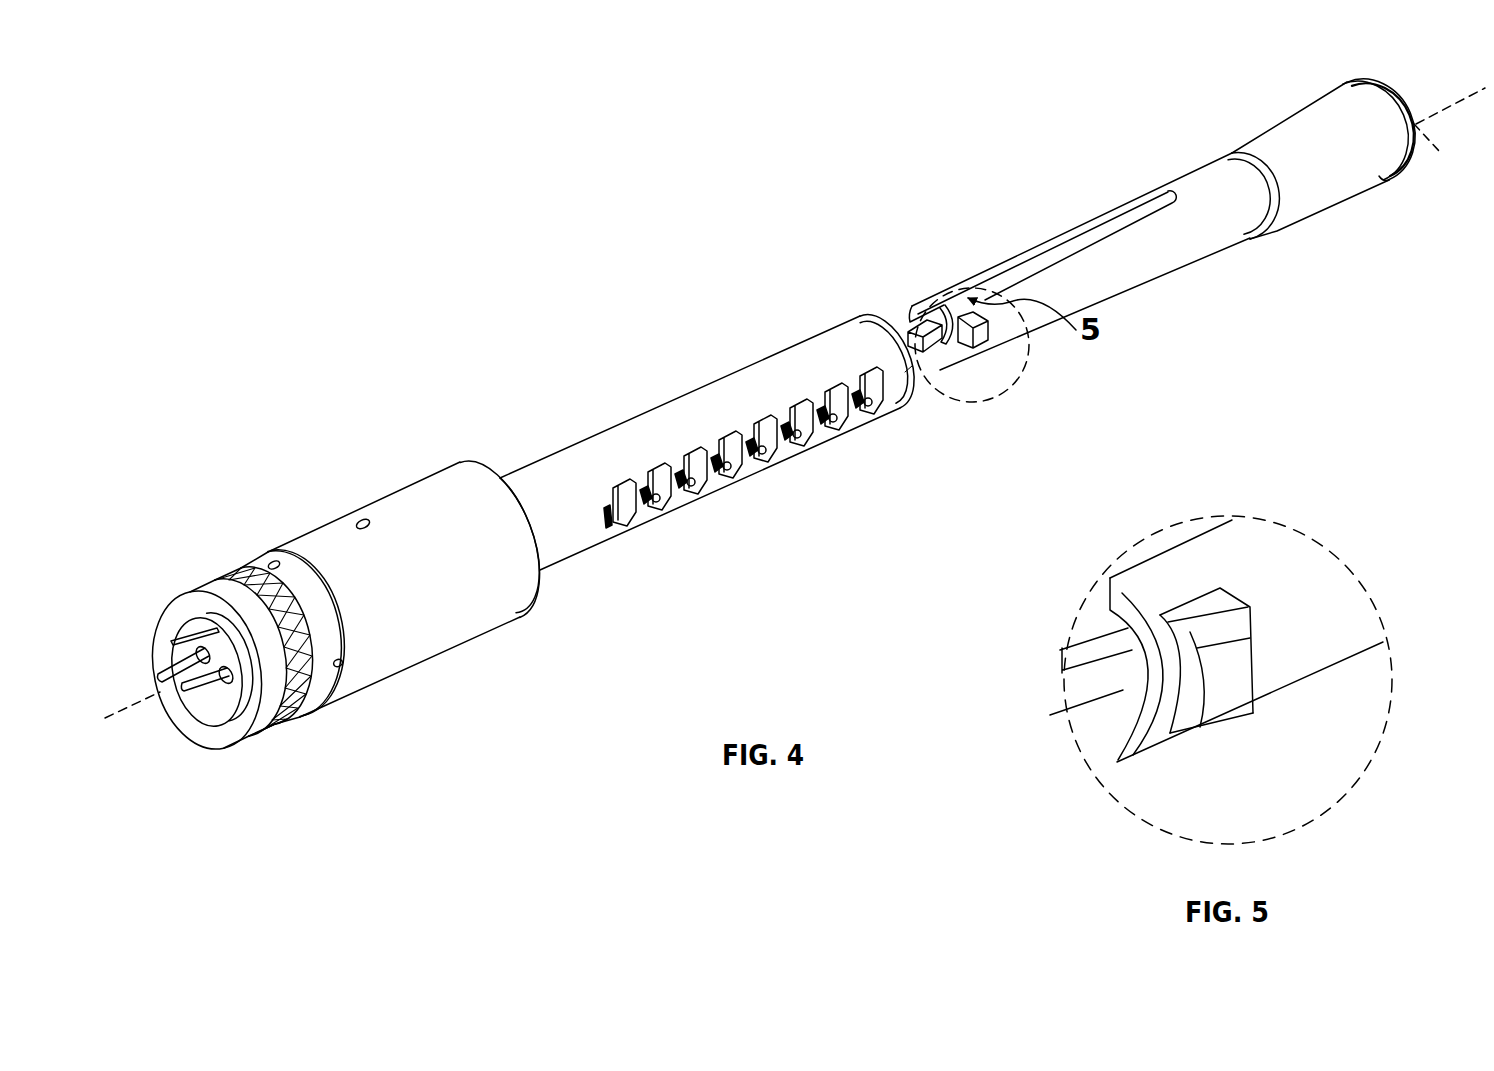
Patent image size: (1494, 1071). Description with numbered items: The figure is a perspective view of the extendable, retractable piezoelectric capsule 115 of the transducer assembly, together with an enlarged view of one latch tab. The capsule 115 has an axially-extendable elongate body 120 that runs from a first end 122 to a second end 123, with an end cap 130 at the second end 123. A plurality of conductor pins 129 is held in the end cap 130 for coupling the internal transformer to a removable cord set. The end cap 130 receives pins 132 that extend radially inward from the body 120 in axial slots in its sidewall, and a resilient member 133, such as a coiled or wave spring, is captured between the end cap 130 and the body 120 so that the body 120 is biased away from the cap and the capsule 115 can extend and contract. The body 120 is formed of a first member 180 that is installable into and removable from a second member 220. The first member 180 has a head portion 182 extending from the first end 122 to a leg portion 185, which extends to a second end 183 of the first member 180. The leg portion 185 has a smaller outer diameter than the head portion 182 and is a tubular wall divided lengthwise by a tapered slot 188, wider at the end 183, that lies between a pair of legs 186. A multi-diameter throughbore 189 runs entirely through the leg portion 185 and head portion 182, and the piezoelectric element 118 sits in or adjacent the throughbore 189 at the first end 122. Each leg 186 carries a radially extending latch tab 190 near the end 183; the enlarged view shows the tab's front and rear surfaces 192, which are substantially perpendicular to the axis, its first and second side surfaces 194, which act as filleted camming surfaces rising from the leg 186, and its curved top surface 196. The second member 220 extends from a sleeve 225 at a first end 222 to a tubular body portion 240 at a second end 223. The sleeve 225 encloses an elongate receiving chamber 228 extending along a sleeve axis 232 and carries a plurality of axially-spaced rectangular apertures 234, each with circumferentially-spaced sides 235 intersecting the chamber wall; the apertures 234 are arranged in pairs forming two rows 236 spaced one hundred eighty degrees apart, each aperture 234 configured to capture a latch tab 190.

In FIG. 4, the piezoelectric capsule 115 is at (218, 386).
In FIG. 4, the piezoelectric element 118 is at (1378, 84).
In FIG. 4, the elongate body 120 is at (290, 458).
In FIG. 4, the first end 122 is at (1392, 176).
In FIG. 4, the second end 123 is at (262, 733).
In FIG. 4, the conductor pins 129 is at (172, 639).
In FIG. 4, the end cap 130 is at (190, 590).
In FIG. 4, the pins 132 is at (345, 668).
In FIG. 4, the resilient member 133 is at (237, 567).
In FIG. 4, the first member 180 is at (1218, 175).
In FIG. 4, the head portion 182 is at (1303, 118).
In FIG. 4, the second end 183 is at (911, 302).
In FIG. 5, the second end 183 is at (1137, 707).
In FIG. 4, the leg portion 185 is at (1233, 157).
In FIG. 4, the legs 186 is at (1042, 244).
In FIG. 5, the legs 186 is at (1197, 553).
In FIG. 4, the slot 188 is at (1125, 218).
In FIG. 4, the multi-diameter throughbore 189 is at (992, 288).
In FIG. 4, the latch tab 190 is at (990, 345).
In FIG. 5, the latch tab 190 is at (1250, 650).
In FIG. 5, the front and rear surfaces 192 is at (1243, 608).
In FIG. 5, the side surfaces 194 is at (1220, 610).
In FIG. 5, the top surface 196 is at (1232, 690).
In FIG. 4, the second member 220 is at (424, 496).
In FIG. 4, the first end 222 is at (900, 406).
In FIG. 4, the second end 223 is at (480, 636).
In FIG. 4, the sleeve 225 is at (563, 452).
In FIG. 4, the receiving chamber 228 is at (918, 380).
In FIG. 4, the sleeve axis 232 is at (1443, 155).
In FIG. 4, the apertures 234 is at (718, 445).
In FIG. 4, the sides 235 is at (712, 437).
In FIG. 4, the rows 236 is at (597, 518).
In FIG. 4, the body portion 240 is at (452, 495).